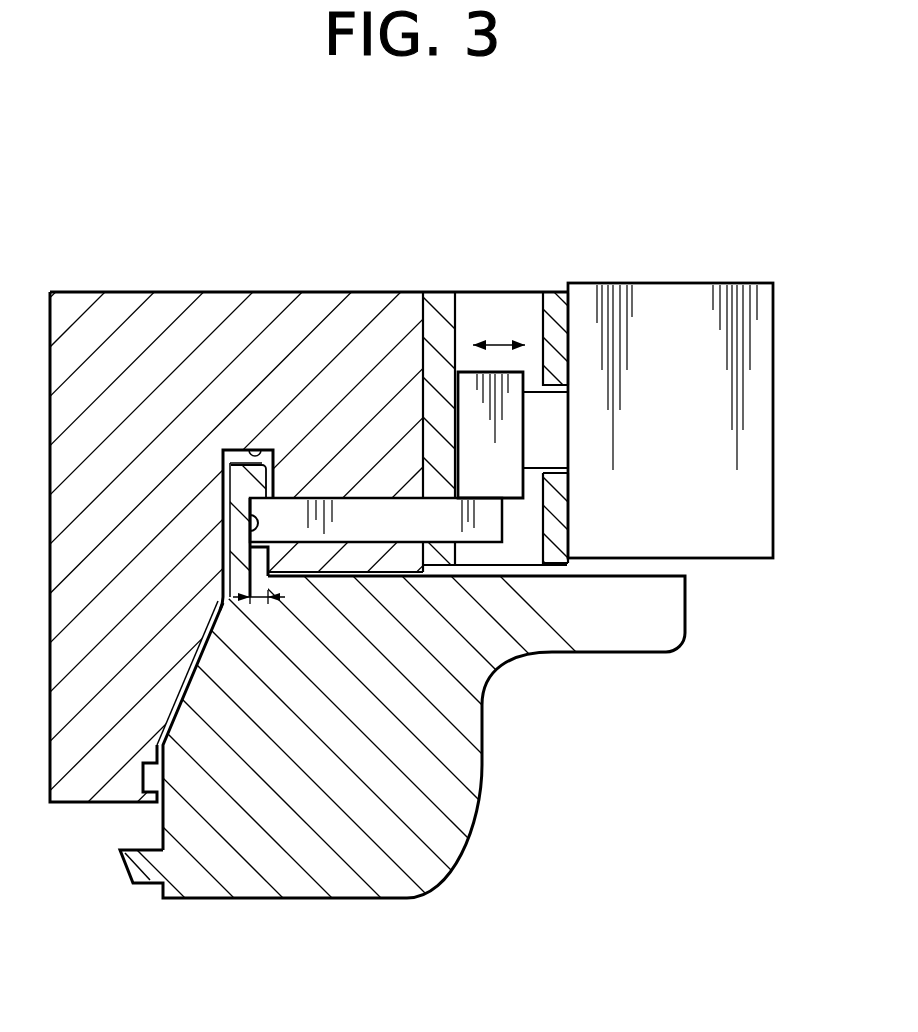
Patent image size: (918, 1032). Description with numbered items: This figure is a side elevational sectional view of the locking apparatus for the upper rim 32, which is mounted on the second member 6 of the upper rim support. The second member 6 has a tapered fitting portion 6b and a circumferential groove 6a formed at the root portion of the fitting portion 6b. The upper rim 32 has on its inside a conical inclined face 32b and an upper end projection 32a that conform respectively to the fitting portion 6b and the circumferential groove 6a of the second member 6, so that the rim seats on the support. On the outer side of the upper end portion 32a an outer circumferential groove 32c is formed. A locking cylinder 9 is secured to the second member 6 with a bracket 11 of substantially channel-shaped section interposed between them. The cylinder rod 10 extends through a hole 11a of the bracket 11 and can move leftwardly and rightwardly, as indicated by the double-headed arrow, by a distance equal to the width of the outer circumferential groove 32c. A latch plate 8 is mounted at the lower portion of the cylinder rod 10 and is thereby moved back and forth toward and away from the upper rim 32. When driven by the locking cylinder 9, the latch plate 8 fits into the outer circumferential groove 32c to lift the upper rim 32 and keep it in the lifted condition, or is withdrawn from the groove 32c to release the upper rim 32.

The second member of the upper rim support 6 is at (277, 303).
The circumferential groove 6a is at (258, 451).
The tapered fitting portion 6b is at (190, 681).
The latch plate 8 is at (400, 523).
The locking cylinder 9 is at (733, 283).
The cylinder rod 10 is at (557, 430).
The bracket 11 is at (558, 303).
The hole 11a is at (488, 313).
The upper rim 32 is at (440, 792).
The upper end projection 32a is at (238, 488).
The conical inclined face 32b is at (200, 669).
The outer circumferential groove 32c is at (248, 522).